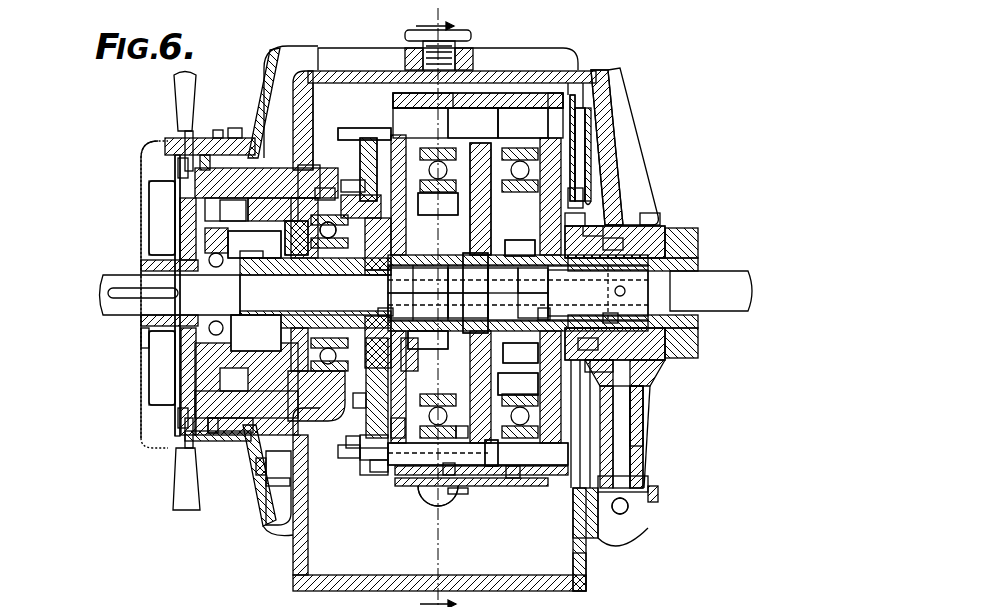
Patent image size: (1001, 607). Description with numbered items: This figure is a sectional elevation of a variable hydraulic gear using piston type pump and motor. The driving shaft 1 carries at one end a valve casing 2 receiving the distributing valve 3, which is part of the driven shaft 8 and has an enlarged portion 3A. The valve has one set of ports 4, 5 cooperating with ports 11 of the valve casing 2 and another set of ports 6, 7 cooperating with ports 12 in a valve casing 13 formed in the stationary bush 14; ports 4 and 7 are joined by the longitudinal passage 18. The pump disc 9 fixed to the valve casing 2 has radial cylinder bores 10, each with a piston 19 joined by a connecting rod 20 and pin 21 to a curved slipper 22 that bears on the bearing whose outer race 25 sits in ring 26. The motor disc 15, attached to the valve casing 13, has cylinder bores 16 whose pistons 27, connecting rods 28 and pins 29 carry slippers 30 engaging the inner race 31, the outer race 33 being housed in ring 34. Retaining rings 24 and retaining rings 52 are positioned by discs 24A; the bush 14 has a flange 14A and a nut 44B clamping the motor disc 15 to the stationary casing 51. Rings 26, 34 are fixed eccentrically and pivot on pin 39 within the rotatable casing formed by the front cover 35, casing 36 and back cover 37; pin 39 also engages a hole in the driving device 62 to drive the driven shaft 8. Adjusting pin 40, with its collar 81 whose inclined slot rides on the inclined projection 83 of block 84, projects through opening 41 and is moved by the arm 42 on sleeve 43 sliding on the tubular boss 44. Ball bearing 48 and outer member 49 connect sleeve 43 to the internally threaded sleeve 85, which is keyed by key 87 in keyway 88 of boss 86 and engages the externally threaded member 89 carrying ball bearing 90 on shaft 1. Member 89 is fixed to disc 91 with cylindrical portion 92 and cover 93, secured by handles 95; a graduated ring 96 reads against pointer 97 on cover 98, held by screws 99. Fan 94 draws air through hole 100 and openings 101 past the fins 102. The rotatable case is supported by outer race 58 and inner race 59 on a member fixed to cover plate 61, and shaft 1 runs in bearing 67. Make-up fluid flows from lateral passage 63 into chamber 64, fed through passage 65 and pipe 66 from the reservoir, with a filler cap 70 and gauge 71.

The driving shaft 1 is at (170, 295).
The valve casing 2 is at (418, 277).
The distributing valve 3 is at (496, 303).
The portion of enlarged diameter 3A is at (474, 293).
The port 4 is at (465, 278).
The port 5 is at (418, 303).
The port 6 is at (533, 279).
The port 7 is at (454, 157).
The driven shaft 8 is at (711, 291).
The pump disc 9 is at (461, 199).
The radial cylinder bores 10 is at (428, 334).
The ports 11 is at (380, 303).
The ports 12 is at (645, 212).
The valve casing 13 is at (519, 350).
The stationary sleeve or bush 14 is at (630, 230).
The flange 14A is at (498, 276).
The motor disc 15 is at (535, 308).
The radial cylinder bores 16 is at (517, 246).
The longitudinal passage 18 is at (598, 293).
The piston 19 is at (352, 395).
The connecting rod 20 is at (452, 425).
The pin 21 is at (345, 433).
The curved slipper 22 is at (372, 462).
The retaining rings 24 is at (352, 140).
The discs 24A is at (342, 195).
The outer bearing race 25 is at (362, 130).
The ring 26 is at (405, 482).
The piston 27 is at (600, 240).
The connecting rod 28 is at (568, 214).
The pin 29 is at (578, 225).
The curved slipper 30 is at (568, 192).
The inner race 31 is at (572, 168).
The outer bearing race 33 is at (585, 128).
The ring 34 is at (545, 95).
The front cover 35 is at (385, 100).
The rotatable casing 36 is at (492, 85).
The back cover 37 is at (600, 85).
The pin 39 is at (473, 123).
The pin 40 is at (478, 452).
The opening 41 is at (393, 425).
The arm 42 is at (352, 445).
The sleeve 43 is at (305, 225).
The tubular boss 44 is at (270, 262).
The nut 44B is at (680, 238).
The ball bearing 48 is at (322, 230).
The outer member 49 is at (318, 185).
The stationary casing 51 is at (292, 552).
The retaining rings 52 is at (517, 382).
The outer race 58 is at (590, 352).
The inner race 59 is at (580, 336).
The cover plate 61 is at (635, 410).
The driving device 62 is at (523, 123).
The lateral passage 63 is at (617, 282).
The annular space or chamber 64 is at (602, 310).
The passage 65 is at (620, 440).
The pipe 66 is at (607, 535).
The bearing 67 is at (371, 281).
The filler cap 70 is at (465, 28).
The gauge 71 is at (456, 491).
The collar 81 is at (505, 465).
The inclined projection 83 is at (468, 462).
The block 84 is at (440, 462).
The internally threaded sleeve 85 is at (240, 412).
The boss 86 is at (222, 175).
The key 87 is at (303, 190).
The keyway 88 is at (265, 162).
The flanged externally threaded member 89 is at (246, 367).
The ball bearing 90 is at (232, 252).
The disc 91 is at (165, 372).
The cylindrical portion 92 is at (197, 135).
The cover 93 is at (141, 186).
The fan 94 is at (150, 212).
The handles 95 is at (175, 97).
The graduated ring 96 is at (212, 130).
The pointer 97 is at (226, 130).
The cover 98 is at (262, 62).
The screws 99 is at (252, 495).
The hole 100 is at (133, 330).
The openings 101 is at (176, 160).
The fins or vanes 102 is at (345, 52).